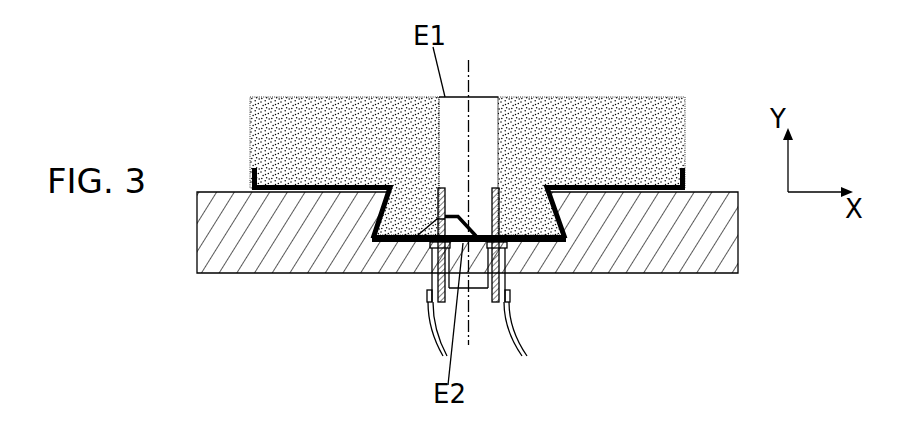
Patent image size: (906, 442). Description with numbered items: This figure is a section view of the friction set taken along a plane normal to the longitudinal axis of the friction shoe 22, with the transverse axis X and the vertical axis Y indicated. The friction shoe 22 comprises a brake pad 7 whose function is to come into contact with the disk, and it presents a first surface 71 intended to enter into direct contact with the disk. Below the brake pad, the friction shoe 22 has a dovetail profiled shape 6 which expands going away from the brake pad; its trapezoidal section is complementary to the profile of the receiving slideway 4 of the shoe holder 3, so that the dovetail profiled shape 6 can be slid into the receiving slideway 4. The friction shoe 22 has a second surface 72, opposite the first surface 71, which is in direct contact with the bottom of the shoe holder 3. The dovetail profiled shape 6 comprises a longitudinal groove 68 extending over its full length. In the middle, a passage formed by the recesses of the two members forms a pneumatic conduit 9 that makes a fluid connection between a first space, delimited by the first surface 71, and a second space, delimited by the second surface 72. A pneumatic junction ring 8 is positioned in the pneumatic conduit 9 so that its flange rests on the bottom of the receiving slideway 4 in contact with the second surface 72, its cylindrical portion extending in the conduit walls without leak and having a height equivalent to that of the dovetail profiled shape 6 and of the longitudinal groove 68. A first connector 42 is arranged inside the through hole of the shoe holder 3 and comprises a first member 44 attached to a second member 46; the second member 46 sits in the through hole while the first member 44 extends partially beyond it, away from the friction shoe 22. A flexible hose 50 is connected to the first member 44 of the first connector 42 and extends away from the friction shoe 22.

The shoe holder 3 is at (214, 182).
The receiving slideway 4 is at (392, 242).
The dovetail profiled shape 6 is at (376, 209).
The brake pad 7 is at (304, 86).
The pneumatic junction ring 8 is at (502, 232).
The pneumatic conduit 9 is at (497, 121).
The friction shoe 22 is at (652, 124).
The first connector 42 is at (423, 309).
The first member 44 is at (503, 250).
The second member 46 is at (518, 225).
The flexible hose 50 is at (527, 343).
The longitudinal groove 68 is at (433, 220).
The first surface 71 is at (603, 97).
The second surface 72 is at (540, 243).